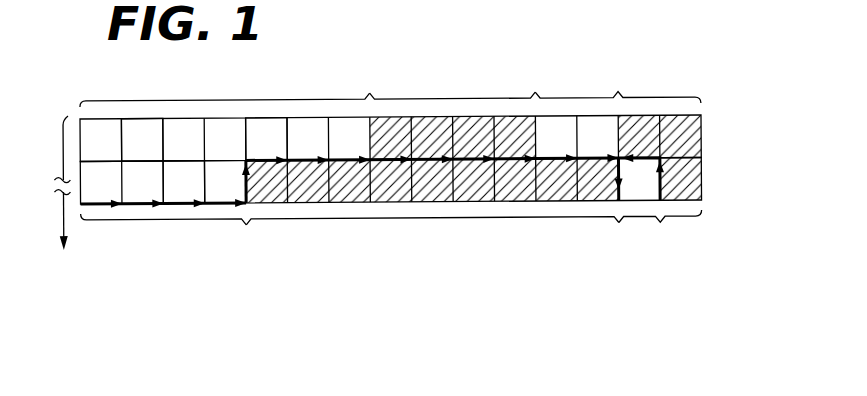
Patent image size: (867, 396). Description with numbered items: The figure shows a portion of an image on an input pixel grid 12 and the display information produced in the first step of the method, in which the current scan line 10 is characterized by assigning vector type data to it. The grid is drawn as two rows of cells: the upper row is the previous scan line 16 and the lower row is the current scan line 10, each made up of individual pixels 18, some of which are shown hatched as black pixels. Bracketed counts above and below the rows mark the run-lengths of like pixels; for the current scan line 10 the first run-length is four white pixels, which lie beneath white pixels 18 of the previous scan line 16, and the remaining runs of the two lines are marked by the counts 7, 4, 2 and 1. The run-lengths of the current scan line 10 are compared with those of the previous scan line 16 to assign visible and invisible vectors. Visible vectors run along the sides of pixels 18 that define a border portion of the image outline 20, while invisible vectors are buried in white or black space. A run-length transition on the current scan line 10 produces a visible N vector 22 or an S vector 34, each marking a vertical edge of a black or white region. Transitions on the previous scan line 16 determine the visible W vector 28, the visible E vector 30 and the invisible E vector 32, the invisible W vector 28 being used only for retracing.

The current scan line 10 is at (424, 207).
The input pixel grid 12 is at (53, 183).
The previous scan line 16 is at (423, 111).
The pixel 18 is at (162, 161).
The image outline 20 is at (291, 113).
The visible N vector 22 is at (218, 210).
The W vector 28 is at (615, 100).
The visible E vector 30 is at (552, 207).
The invisible E vector 32 is at (258, 38).
The S vector 34 is at (648, 213).
The seven-cell span 7 is at (225, 92).
The four-cell span 4 is at (308, 161).
The two-cell span 2 is at (618, 88).
The one-cell span 1 is at (660, 226).